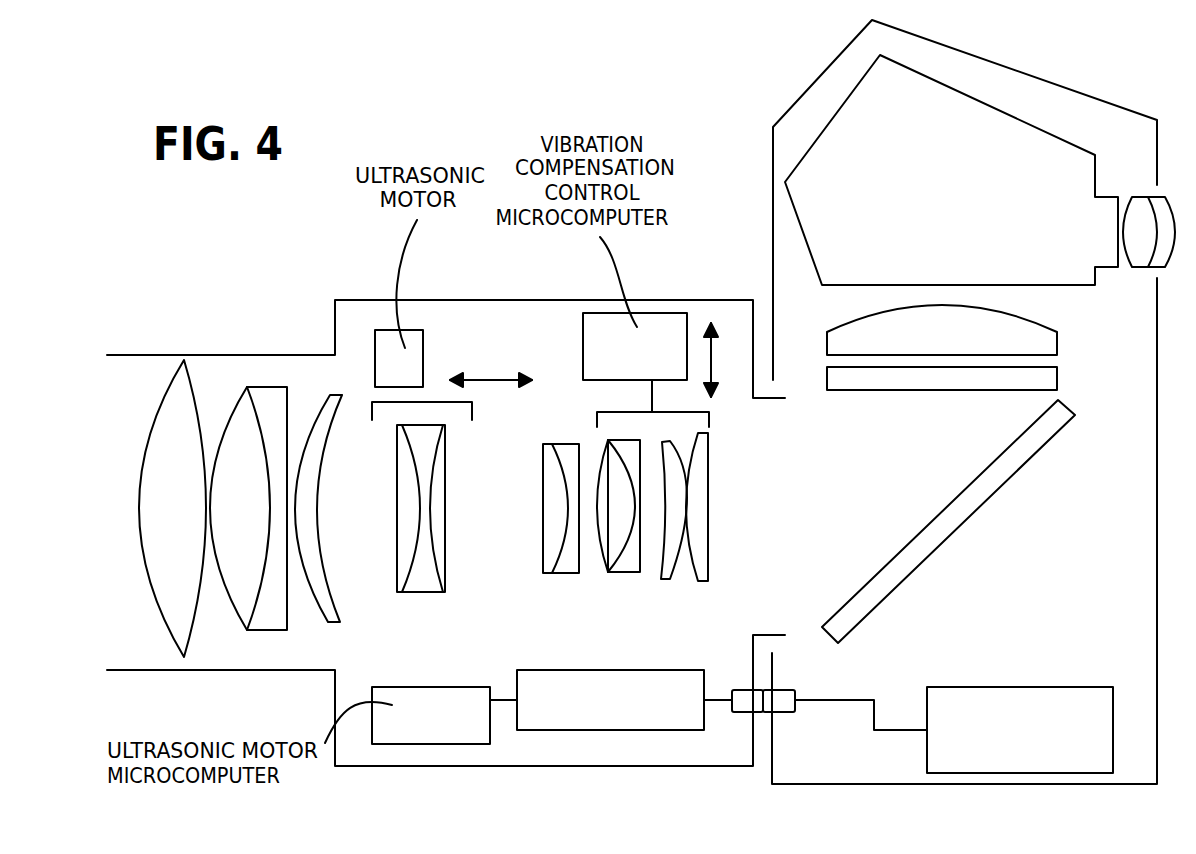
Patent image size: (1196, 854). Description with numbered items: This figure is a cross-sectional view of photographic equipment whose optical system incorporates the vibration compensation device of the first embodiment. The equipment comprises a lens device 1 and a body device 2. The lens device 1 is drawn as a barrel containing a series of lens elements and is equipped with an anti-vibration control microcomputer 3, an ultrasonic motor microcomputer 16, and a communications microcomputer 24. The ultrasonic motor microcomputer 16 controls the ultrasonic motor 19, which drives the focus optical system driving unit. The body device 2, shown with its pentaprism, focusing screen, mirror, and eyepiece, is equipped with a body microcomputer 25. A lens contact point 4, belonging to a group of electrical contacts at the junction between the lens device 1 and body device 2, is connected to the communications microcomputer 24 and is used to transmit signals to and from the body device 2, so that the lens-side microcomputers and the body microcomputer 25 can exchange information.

The lens device 1 is at (230, 368).
The body device 2 is at (1097, 98).
The anti-vibration control microcomputer 3 is at (660, 320).
The lens contact point 4 is at (747, 705).
The ultrasonic motor microcomputer 16 is at (458, 728).
The ultrasonic motor 19 is at (382, 338).
The communications microcomputer 24 is at (577, 723).
The body microcomputer 25 is at (997, 762).